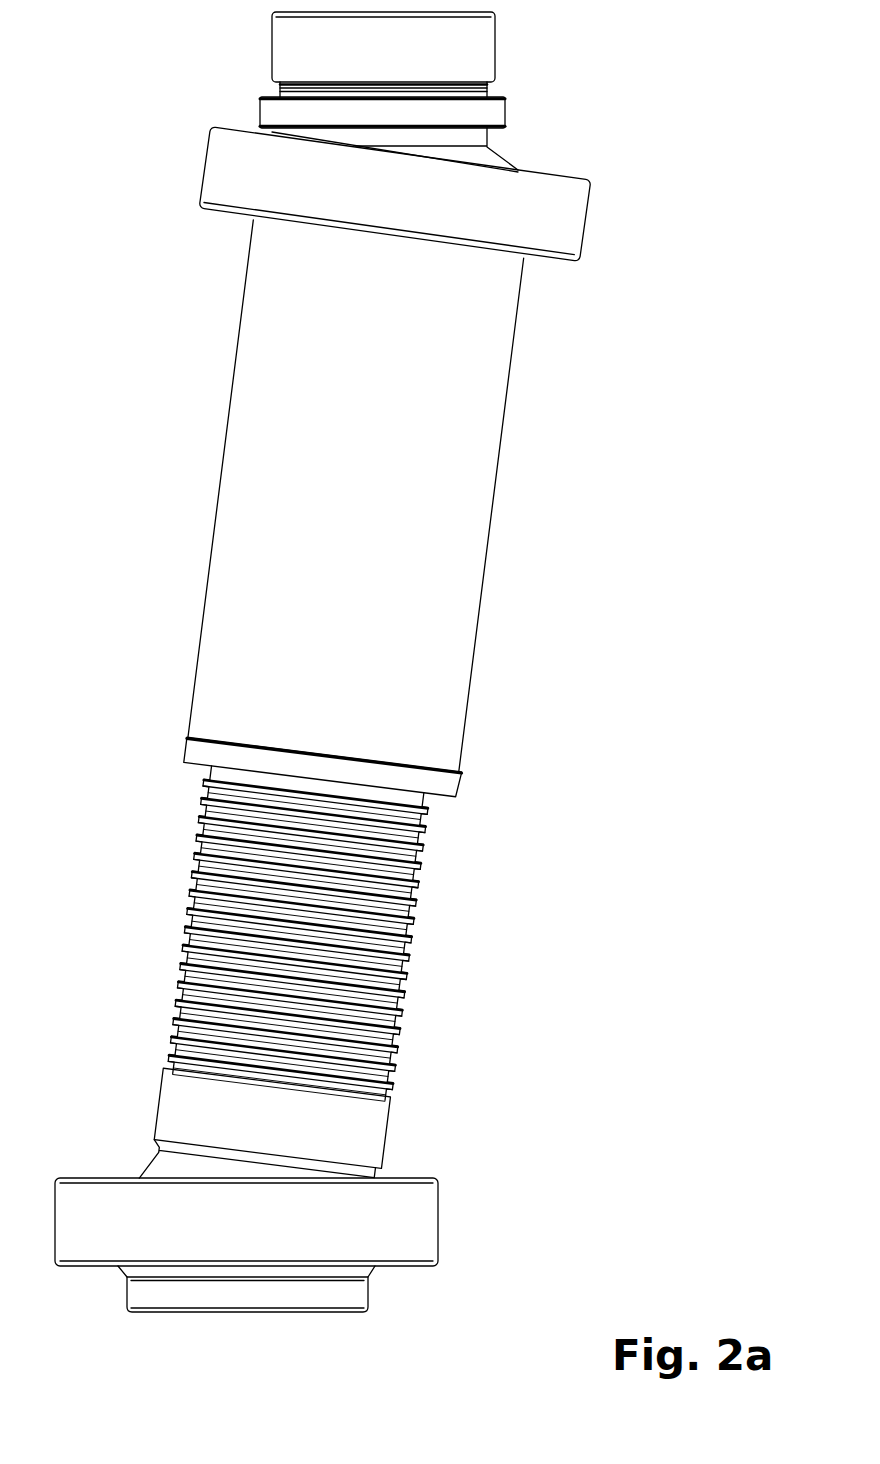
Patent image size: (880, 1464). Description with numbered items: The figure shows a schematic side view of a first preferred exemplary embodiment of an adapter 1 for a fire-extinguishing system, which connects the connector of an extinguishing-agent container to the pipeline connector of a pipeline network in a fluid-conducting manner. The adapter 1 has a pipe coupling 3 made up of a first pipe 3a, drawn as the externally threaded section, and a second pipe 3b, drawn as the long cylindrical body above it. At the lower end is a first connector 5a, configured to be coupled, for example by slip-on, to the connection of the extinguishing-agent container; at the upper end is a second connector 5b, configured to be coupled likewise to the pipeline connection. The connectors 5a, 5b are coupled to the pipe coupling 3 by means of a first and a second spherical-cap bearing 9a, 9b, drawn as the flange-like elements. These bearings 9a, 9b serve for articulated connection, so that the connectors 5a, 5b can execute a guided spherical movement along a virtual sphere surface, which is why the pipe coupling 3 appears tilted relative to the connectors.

The adapter 1 is at (94, 483).
The pipe coupling 3 is at (560, 720).
The first pipe 3a is at (418, 873).
The second pipe 3b is at (443, 745).
The first connector 5a is at (399, 1301).
The second connector 5b is at (519, 48).
The first spherical-cap bearing 9a is at (476, 1225).
The second spherical-cap bearing 9b is at (615, 223).